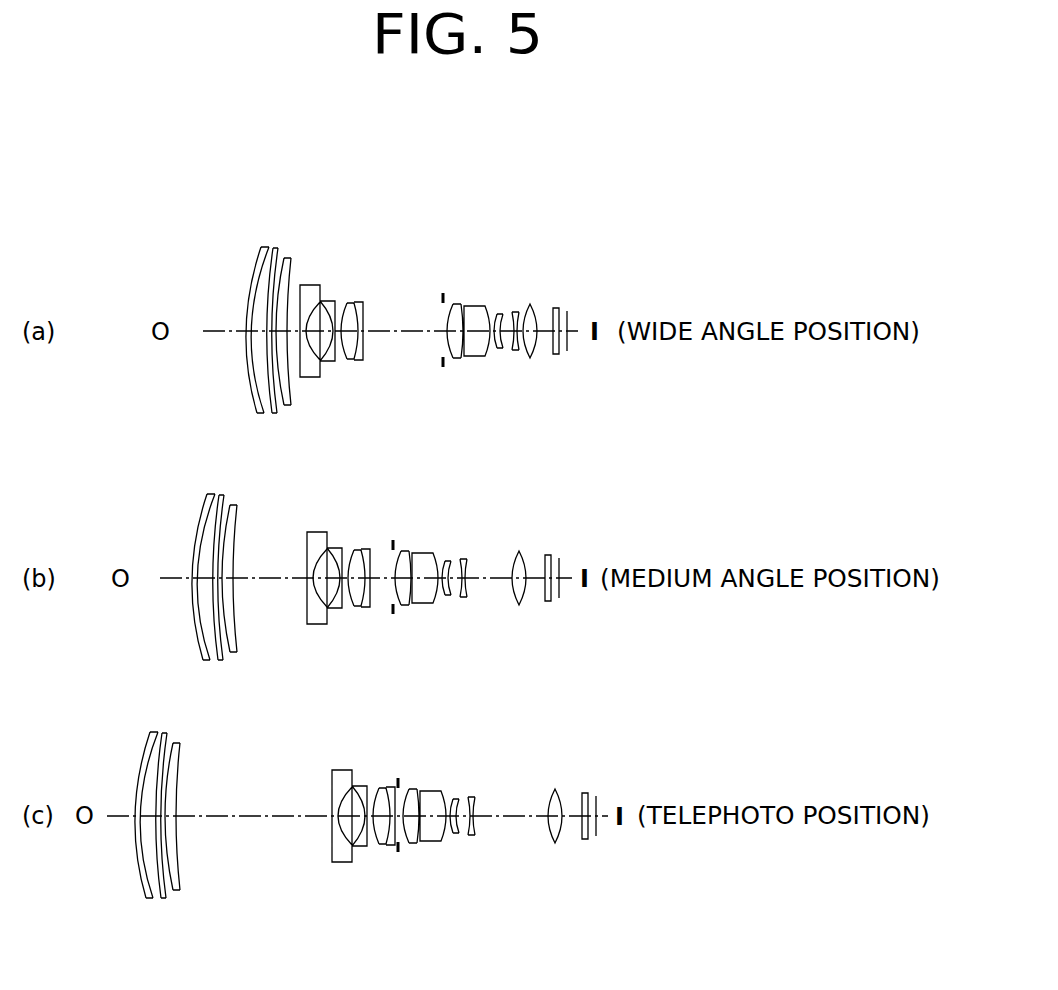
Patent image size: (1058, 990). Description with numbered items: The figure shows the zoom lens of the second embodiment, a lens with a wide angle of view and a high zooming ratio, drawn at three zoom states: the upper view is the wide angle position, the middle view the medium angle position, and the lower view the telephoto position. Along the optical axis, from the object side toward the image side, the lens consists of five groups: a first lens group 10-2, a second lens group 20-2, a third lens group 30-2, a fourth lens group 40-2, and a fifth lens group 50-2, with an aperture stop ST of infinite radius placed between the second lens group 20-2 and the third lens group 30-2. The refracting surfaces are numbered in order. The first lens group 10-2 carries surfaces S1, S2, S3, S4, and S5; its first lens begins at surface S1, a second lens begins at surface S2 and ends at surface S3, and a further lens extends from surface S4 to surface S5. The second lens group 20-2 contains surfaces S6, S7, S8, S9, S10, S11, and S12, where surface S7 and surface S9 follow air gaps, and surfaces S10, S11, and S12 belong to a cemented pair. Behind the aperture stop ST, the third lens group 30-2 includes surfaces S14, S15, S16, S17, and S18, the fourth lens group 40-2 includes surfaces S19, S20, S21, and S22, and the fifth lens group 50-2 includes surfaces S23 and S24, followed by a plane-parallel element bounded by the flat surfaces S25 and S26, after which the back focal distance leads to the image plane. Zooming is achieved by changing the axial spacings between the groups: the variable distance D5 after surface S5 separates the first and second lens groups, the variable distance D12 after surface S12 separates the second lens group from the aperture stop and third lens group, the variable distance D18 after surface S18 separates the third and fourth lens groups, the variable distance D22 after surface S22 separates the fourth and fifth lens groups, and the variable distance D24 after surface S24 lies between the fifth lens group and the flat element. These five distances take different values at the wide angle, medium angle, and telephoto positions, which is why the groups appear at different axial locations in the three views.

The first lens group 10-2 is at (295, 223).
The second lens group 20-2 is at (300, 223).
The third lens group 30-2 is at (485, 223).
The fourth lens group 40-2 is at (488, 223).
The fifth lens group 50-2 is at (525, 223).
The aperture stop ST is at (443, 292).
The variable distance D5 is at (300, 345).
The variable distance D12 is at (382, 343).
The variable distance D18 is at (486, 356).
The variable distance D22 is at (525, 352).
The variable distance D24 is at (543, 350).
The lens surface S1 is at (192, 614).
The lens surface S2 is at (198, 627).
The lens surface S3 is at (206, 645).
The lens surface S4 is at (220, 550).
The lens surface S5 is at (239, 637).
The lens surface S6 is at (304, 597).
The lens surface S7 is at (316, 606).
The lens surface S8 is at (331, 613).
The lens surface S9 is at (312, 556).
The lens surface S10 is at (349, 604).
The lens surface S11 is at (348, 548).
The lens surface S12 is at (366, 550).
The lens surface S14 is at (398, 604).
The lens surface S15 is at (416, 552).
The lens surface S16 is at (430, 605).
The lens surface S17 is at (437, 555).
The lens surface S18 is at (449, 597).
The lens surface S19 is at (453, 561).
The lens surface S20 is at (462, 598).
The lens surface S21 is at (464, 572).
The lens surface S22 is at (470, 577).
The lens surface S23 is at (517, 600).
The lens surface S24 is at (530, 586).
The lens surface S25 is at (548, 556).
The lens surface S26 is at (561, 570).